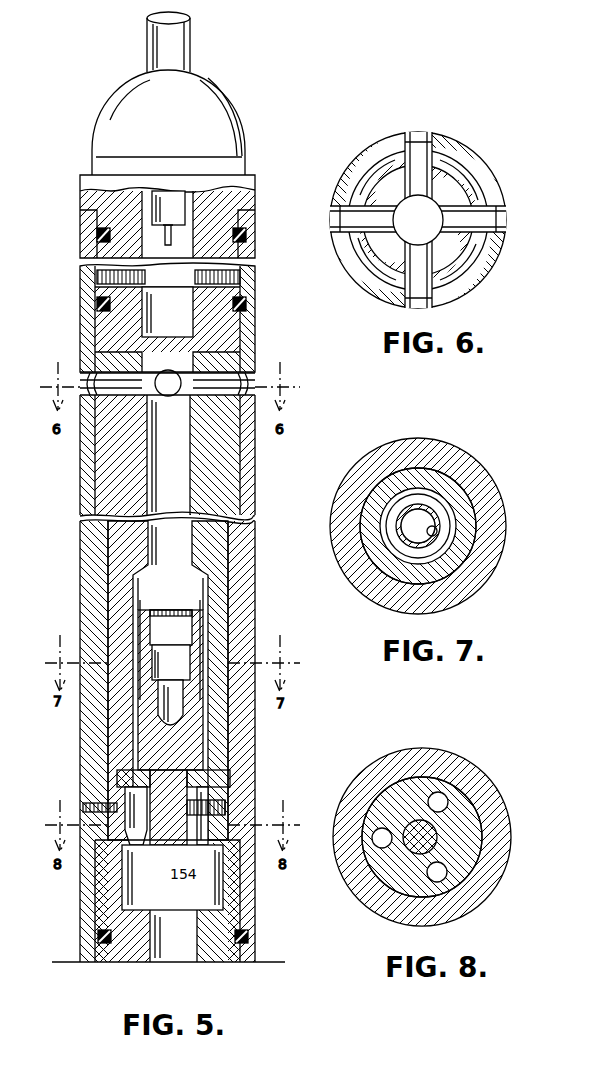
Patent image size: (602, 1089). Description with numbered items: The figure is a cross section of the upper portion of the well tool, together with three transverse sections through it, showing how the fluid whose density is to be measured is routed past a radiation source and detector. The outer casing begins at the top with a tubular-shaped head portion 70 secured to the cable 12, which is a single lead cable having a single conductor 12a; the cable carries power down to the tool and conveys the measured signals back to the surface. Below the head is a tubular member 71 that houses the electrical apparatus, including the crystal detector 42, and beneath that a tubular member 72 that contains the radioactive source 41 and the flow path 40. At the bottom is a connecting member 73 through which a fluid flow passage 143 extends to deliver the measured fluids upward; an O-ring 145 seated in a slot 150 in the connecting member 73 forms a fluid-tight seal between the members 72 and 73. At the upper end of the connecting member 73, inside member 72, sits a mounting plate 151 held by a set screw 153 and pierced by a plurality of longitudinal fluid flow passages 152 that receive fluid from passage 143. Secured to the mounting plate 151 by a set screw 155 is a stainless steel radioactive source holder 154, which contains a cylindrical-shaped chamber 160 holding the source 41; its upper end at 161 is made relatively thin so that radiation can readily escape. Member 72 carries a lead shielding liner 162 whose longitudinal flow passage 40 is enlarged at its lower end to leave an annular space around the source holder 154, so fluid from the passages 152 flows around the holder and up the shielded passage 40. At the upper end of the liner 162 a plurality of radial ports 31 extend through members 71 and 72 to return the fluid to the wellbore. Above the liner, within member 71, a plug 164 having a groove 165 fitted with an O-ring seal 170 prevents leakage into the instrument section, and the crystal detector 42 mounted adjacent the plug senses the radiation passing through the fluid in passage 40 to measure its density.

In FIG. 5, the cable 12 is at (147, 48).
In FIG. 5, the single conductor 12a is at (172, 237).
In FIG. 5, the radial ports 31 is at (80, 393).
In FIG. 6, the radial ports 31 is at (425, 140).
In FIG. 5, the flow path 40 is at (190, 445).
In FIG. 6, the flow path 40 is at (405, 205).
In FIG. 5, the radioactive source 41 is at (140, 618).
In FIG. 5, the crystal detector 42 is at (178, 321).
In FIG. 5, the head portion 70 is at (80, 198).
In FIG. 5, the tubular member 71 is at (80, 286).
In FIG. 6, the tubular member 71 is at (480, 150).
In FIG. 5, the tubular member 72 is at (80, 563).
In FIG. 6, the tubular member 72 is at (445, 146).
In FIG. 7, the tubular member 72 is at (505, 482).
In FIG. 8, the tubular member 72 is at (408, 750).
In FIG. 5, the connecting member 73 is at (121, 958).
In FIG. 5, the fluid flow passage 143 is at (220, 955).
In FIG. 5, the O-ring 145 is at (248, 937).
In FIG. 5, the slot 150 is at (240, 920).
In FIG. 5, the mounting plate 151 is at (200, 840).
In FIG. 8, the mounting plate 151 is at (455, 800).
In FIG. 5, the fluid flow passages 152 is at (125, 812).
In FIG. 8, the fluid flow passages 152 is at (375, 828).
In FIG. 5, the set screw 153 is at (83, 806).
In FIG. 5, the radioactive source holder 154 is at (203, 742).
In FIG. 7, the radioactive source holder 154 is at (398, 506).
In FIG. 8, the radioactive source holder 154 is at (445, 835).
In FIG. 5, the set screw 155 is at (225, 800).
In FIG. 5, the cylindrical-shaped chamber 160 is at (212, 606).
In FIG. 7, the cylindrical-shaped chamber 160 is at (430, 530).
In FIG. 5, the upper end of source holder 161 is at (205, 588).
In FIG. 5, the shielding liner 162 is at (230, 536).
In FIG. 6, the shielding liner 162 is at (395, 160).
In FIG. 7, the shielding liner 162 is at (470, 468).
In FIG. 5, the plug 164 is at (254, 329).
In FIG. 5, the groove 165 is at (240, 294).
In FIG. 5, the O-ring seal 170 is at (240, 302).